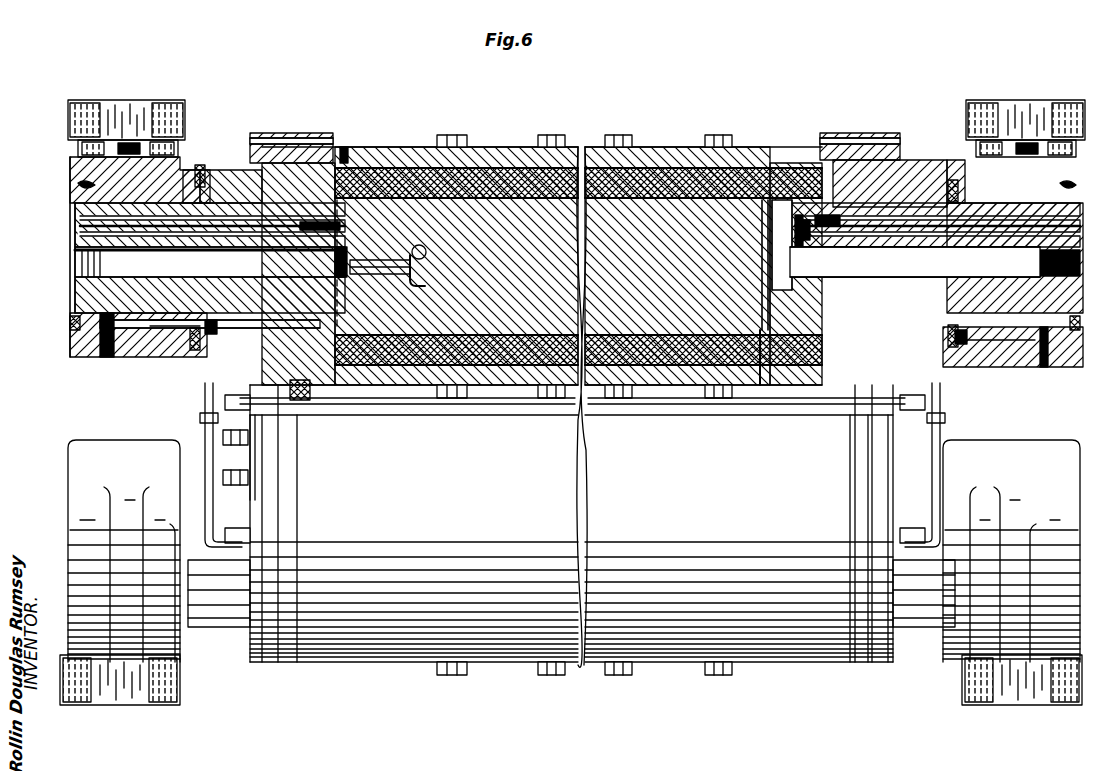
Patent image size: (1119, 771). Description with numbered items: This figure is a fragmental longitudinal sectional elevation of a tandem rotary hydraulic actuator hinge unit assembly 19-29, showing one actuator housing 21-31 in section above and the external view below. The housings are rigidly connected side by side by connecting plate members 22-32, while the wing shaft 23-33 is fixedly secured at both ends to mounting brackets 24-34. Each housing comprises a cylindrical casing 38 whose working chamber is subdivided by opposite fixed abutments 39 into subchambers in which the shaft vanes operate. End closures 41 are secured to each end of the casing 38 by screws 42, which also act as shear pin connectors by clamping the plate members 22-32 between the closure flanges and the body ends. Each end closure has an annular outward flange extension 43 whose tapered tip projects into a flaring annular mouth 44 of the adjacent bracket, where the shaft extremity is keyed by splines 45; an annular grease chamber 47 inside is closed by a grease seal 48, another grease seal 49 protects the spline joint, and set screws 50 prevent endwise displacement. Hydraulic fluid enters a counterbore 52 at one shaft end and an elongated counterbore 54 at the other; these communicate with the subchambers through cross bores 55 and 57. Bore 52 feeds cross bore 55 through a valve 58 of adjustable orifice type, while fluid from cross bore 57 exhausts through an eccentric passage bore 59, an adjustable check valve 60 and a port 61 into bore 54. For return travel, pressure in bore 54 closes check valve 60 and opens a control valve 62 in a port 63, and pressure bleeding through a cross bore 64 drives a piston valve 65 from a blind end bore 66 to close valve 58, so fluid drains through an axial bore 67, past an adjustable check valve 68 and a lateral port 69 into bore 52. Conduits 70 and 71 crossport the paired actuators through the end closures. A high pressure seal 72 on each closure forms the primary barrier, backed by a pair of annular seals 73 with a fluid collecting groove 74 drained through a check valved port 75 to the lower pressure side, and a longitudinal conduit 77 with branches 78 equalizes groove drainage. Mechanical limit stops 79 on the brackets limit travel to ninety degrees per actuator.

The tandem rotary hydraulic actuator hinge unit assembly 19-29 is at (707, 114).
The actuator housing 21-31 is at (492, 148).
The connecting plate member 22-32 is at (285, 130).
The wing shaft 23-33 is at (1055, 298).
The mounting bracket 24-34 is at (70, 445).
The cylindrical casing 38 is at (762, 150).
The fixed abutment 39 is at (640, 183).
The end closure 41 is at (312, 137).
The screw 42 is at (240, 172).
The annular outward flange extension 43 is at (196, 180).
The flaring annular mouth 44 is at (165, 328).
The spline 45 is at (82, 186).
The annular grease chamber 47 is at (205, 332).
The grease seal 48 is at (200, 165).
The grease seal 49 is at (72, 322).
The set screw 50 is at (107, 357).
The counterbore 52 is at (120, 266).
The elongated counterbore 54 is at (1045, 258).
The cross bore 55 is at (345, 205).
The cross bore 57 is at (763, 385).
The valve 58 is at (338, 278).
The passage bore 59 is at (768, 170).
The adjustable check valve 60 is at (802, 175).
The port 61 is at (866, 280).
The control valve 62 is at (765, 240).
The port 63 is at (806, 243).
The cross bore 64 is at (426, 250).
The piston valve 65 is at (420, 283).
The blind end bore 66 is at (412, 267).
The axial bore 67 is at (347, 150).
The adjustable check valve 68 is at (318, 240).
The lateral port 69 is at (282, 240).
The conduit 70 is at (250, 488).
The conduit 71 is at (250, 458).
The high pressure seal 72 is at (832, 228).
The annular seal 73 is at (290, 325).
The fluid collecting groove 74 is at (265, 457).
The check valved port 75 is at (250, 240).
The longitudinally extending conduit 77 is at (518, 408).
The branch 78 is at (210, 445).
The mechanical limit stop 79 is at (215, 610).